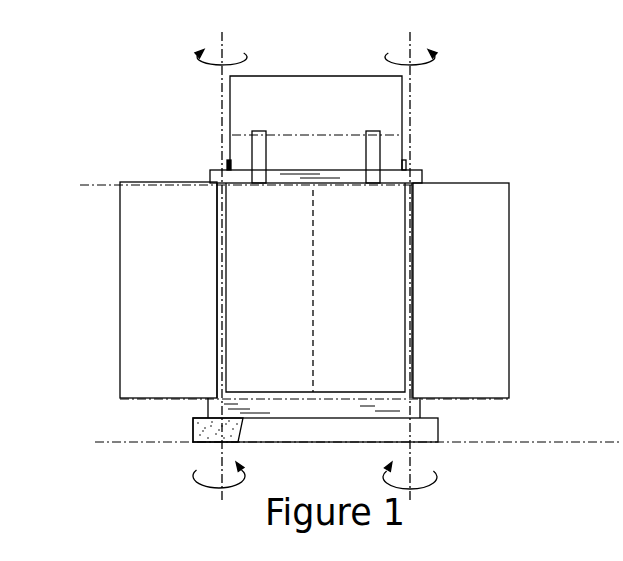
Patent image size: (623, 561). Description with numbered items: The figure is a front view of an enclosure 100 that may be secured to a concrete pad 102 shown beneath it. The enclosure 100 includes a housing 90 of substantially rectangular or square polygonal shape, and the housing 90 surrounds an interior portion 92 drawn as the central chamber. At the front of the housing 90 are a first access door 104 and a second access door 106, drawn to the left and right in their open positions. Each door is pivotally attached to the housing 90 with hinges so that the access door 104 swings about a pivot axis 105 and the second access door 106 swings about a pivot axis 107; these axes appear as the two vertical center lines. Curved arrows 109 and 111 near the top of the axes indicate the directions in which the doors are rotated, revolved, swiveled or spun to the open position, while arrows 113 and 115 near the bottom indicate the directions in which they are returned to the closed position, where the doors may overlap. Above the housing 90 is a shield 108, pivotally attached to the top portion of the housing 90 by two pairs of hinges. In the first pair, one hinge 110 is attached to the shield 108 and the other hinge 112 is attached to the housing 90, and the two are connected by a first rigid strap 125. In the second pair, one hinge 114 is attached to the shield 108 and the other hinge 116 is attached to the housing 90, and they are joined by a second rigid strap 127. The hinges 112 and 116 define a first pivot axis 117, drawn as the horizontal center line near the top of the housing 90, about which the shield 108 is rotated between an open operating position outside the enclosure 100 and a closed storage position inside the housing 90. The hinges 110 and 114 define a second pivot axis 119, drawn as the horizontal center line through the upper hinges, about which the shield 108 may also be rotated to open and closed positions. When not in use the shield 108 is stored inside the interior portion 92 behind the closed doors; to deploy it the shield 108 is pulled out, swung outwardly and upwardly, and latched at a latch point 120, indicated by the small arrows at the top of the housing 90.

The enclosure 100 is at (474, 31).
The housing 90 is at (416, 400).
The interior portion 92 is at (362, 333).
The concrete pad 102 is at (192, 430).
The access door 104 is at (130, 240).
The pivot axis 105 is at (222, 452).
The second access door 106 is at (500, 240).
The pivot axis 107 is at (410, 453).
The shield 108 is at (327, 76).
The arrow 109 is at (197, 58).
The hinge 110 is at (375, 144).
The arrow 111 is at (434, 58).
The hinge 112 is at (372, 187).
The arrow 113 is at (197, 478).
The hinge 114 is at (258, 131).
The arrow 115 is at (437, 483).
The hinge 116 is at (253, 185).
The first pivot axis 117 is at (103, 183).
The second pivot axis 119 is at (295, 134).
The latch point 120 is at (216, 159).
The first rigid strap 125 is at (405, 163).
The second rigid strap 127 is at (254, 147).